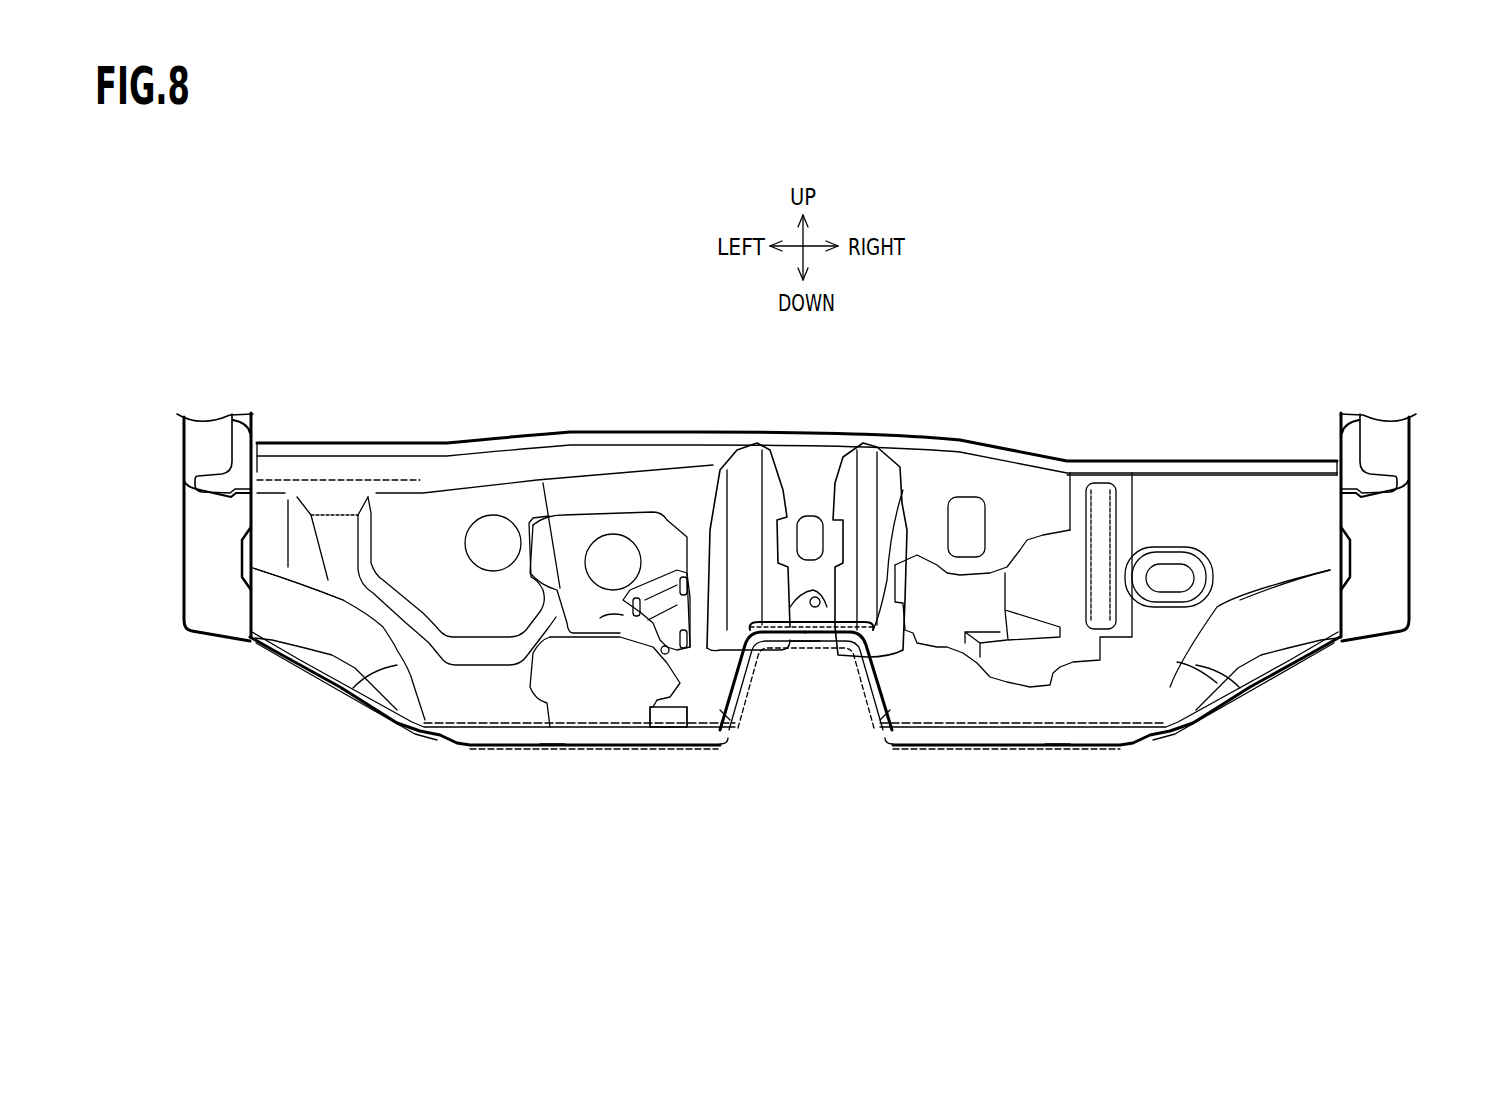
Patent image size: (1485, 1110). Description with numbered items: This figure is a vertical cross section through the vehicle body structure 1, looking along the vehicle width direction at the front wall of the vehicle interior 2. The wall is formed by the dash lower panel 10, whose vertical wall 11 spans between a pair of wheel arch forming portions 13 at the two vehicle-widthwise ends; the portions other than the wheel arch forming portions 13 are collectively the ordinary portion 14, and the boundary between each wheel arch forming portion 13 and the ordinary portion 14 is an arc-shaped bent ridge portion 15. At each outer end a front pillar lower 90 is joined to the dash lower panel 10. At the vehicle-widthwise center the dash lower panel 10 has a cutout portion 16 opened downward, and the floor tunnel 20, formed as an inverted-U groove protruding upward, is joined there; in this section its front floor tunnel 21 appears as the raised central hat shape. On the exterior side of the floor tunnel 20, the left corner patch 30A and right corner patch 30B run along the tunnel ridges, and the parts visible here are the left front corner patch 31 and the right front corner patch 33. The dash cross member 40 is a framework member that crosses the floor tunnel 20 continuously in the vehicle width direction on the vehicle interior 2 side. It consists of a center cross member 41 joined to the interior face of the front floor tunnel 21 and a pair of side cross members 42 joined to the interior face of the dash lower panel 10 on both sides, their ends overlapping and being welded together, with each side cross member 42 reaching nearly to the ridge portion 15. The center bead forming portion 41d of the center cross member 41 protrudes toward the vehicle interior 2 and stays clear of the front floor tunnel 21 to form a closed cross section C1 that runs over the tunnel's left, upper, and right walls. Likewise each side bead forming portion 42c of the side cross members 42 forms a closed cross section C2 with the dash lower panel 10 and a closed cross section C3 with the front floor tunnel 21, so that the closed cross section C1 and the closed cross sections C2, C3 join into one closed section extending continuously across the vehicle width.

The vehicle body structure 1 is at (1036, 420).
The vehicle interior 2 is at (414, 551).
The dash lower panel 10 is at (636, 423).
The vertical wall 11 is at (462, 472).
The wheel arch forming portion 13 is at (325, 630).
The ordinary portion 14 is at (340, 493).
The ridge portion 15 is at (367, 700).
The cutout portion 16 is at (720, 750).
The floor tunnel 20 is at (840, 714).
The front floor tunnel 21 is at (871, 709).
The left corner patch 30A is at (765, 649).
The right corner patch 30B is at (838, 649).
The left front corner patch 31 is at (772, 729).
The right front corner patch 33 is at (861, 748).
The dash cross member 40 is at (795, 557).
The center cross member 41 is at (807, 623).
The center bead forming portion 41d is at (903, 490).
The side cross member 42 is at (482, 726).
The side bead forming portion 42c is at (607, 727).
The front pillar lower 90 is at (183, 527).
The closed cross section C1 is at (800, 637).
The closed cross section C2 is at (553, 742).
The closed cross section C3 is at (728, 707).